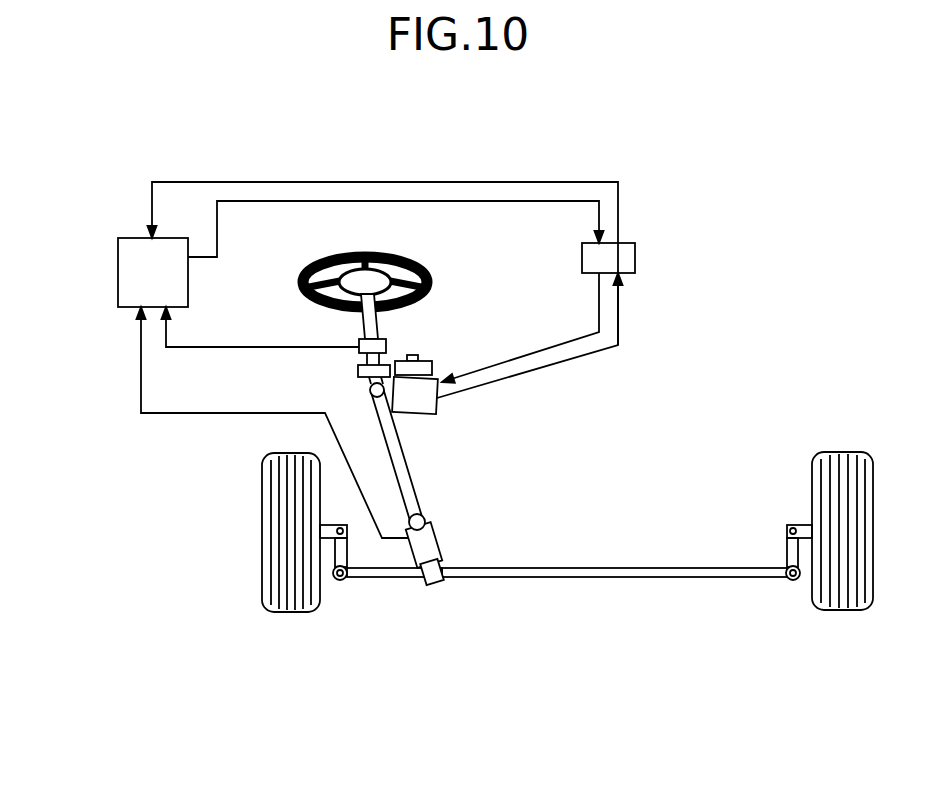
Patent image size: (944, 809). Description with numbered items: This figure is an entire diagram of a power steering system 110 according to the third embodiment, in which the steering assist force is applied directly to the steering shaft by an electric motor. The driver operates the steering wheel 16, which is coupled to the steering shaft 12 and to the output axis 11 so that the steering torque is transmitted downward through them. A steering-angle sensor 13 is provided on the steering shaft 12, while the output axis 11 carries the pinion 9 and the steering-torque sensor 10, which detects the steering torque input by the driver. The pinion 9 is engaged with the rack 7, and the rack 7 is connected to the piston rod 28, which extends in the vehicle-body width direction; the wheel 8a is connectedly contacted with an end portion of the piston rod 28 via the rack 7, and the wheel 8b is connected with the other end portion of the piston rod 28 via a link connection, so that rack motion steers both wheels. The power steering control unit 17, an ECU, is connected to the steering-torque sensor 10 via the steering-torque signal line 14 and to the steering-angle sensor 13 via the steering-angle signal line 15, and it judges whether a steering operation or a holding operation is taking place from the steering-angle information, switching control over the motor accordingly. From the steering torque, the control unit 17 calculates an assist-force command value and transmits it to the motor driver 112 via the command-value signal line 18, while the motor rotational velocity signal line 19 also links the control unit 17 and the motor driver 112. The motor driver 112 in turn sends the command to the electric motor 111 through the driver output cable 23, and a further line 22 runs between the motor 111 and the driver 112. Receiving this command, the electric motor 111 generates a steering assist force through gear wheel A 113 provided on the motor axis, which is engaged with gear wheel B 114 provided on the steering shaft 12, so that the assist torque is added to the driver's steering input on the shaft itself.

The rack 7 is at (373, 577).
The wheel 8a is at (290, 612).
The wheel 8b is at (842, 610).
The pinion 9 is at (428, 585).
The steering-torque sensor 10 is at (427, 537).
The output axis 11 is at (413, 500).
The steering shaft 12 is at (365, 332).
The steering-angle sensor 13 is at (386, 342).
The steering-torque signal line 14 is at (182, 413).
The steering-angle signal line 15 is at (252, 347).
The steering wheel 16 is at (367, 254).
The power steering control unit 17 is at (118, 263).
The command-value signal line 18 is at (487, 201).
The motor rotational velocity signal line 19 is at (358, 182).
The motor current feedback line 22 is at (627, 297).
The driver output cable 23 is at (599, 288).
The piston rod 28 is at (777, 577).
The power steering system 110 is at (753, 196).
The electric motor 111 is at (418, 402).
The motor driver 112 is at (630, 257).
The gear wheel A 113 is at (418, 357).
The gear wheel B 114 is at (358, 372).